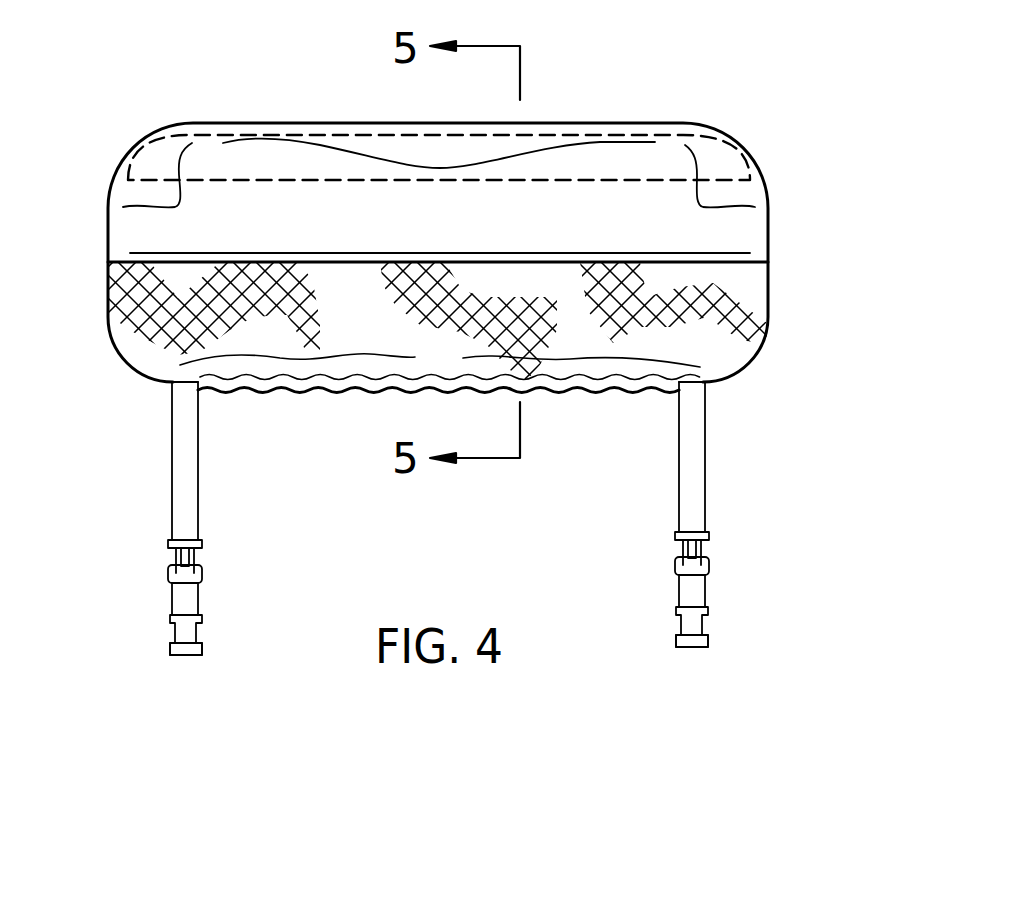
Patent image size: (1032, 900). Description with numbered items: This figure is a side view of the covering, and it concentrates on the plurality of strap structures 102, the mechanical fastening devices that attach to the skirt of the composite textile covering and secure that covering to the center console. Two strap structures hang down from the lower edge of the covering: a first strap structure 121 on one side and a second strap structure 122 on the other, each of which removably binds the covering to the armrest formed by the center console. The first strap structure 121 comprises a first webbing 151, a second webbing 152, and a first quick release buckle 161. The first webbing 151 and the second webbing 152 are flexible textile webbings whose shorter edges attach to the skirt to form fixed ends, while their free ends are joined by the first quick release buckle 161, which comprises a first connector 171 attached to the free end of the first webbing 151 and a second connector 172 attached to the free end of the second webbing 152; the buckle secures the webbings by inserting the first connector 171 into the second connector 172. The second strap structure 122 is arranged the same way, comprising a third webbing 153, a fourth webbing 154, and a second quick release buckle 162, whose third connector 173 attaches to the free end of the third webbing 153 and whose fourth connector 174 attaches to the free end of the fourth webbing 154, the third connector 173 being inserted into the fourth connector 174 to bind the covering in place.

The plurality of strap structures 102 is at (738, 723).
The first strap structure 121 is at (186, 658).
The second strap structure 122 is at (692, 650).
The first webbing 151 is at (183, 415).
The second webbing 152 is at (182, 601).
The third webbing 153 is at (705, 465).
The fourth webbing 154 is at (678, 588).
The first quick release buckle 161 is at (228, 601).
The second quick release buckle 162 is at (743, 610).
The first connector 171 is at (200, 558).
The second connector 172 is at (197, 635).
The third connector 173 is at (707, 552).
The fourth connector 174 is at (707, 625).